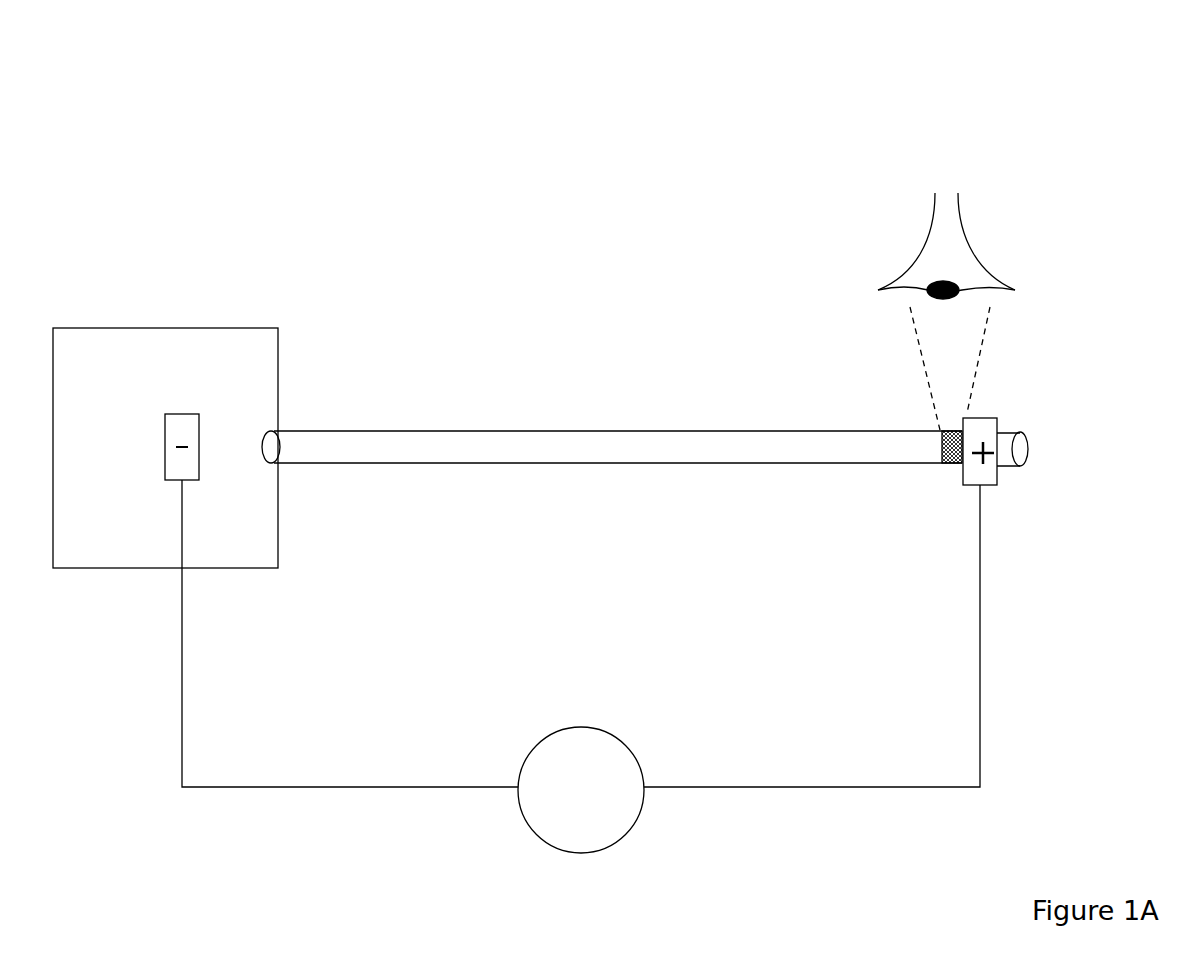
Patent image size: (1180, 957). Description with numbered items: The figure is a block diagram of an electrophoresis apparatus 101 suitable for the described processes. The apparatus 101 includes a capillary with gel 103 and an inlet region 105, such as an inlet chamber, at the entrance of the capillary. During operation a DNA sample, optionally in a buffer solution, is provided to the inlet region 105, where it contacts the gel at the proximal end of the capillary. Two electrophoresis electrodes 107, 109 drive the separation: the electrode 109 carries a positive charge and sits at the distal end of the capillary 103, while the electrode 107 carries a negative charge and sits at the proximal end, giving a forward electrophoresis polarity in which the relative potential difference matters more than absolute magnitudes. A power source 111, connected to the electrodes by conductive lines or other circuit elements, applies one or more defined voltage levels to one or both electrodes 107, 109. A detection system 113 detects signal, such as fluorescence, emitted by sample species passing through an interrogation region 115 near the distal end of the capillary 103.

The electrophoresis apparatus 101 is at (780, 99).
The capillary with gel 103 is at (618, 435).
The inlet region 105 is at (205, 338).
The electrophoresis electrode 107 is at (198, 423).
The electrophoresis electrode 109 is at (992, 428).
The power source 111 is at (623, 838).
The detection system 113 is at (962, 255).
The interrogation region 115 is at (950, 447).